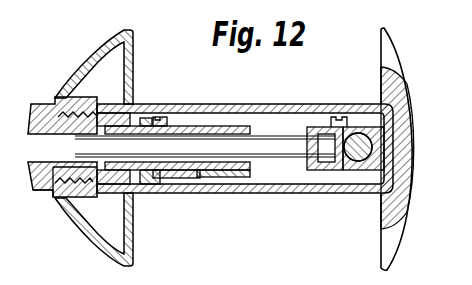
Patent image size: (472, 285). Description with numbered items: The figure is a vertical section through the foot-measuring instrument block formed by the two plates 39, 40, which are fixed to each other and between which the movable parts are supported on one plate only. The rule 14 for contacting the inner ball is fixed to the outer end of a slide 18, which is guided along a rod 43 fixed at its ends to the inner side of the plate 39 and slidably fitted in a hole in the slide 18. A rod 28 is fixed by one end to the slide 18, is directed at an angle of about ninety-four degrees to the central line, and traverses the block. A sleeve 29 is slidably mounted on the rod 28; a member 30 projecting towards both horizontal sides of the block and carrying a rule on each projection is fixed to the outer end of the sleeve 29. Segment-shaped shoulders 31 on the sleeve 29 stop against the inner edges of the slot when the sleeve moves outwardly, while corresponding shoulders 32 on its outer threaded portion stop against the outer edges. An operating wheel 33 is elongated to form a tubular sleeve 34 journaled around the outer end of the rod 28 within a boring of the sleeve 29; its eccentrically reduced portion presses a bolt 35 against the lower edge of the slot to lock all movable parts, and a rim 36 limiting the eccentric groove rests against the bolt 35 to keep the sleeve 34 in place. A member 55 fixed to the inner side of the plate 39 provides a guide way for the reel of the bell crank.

The rule 14 is at (403, 72).
The slide 18 is at (336, 172).
The rod 28 is at (270, 158).
The sleeve 29 is at (203, 127).
The member 30 is at (92, 55).
The segment-shaped shoulders 31 is at (167, 118).
The shoulders 32 is at (72, 230).
The operating wheel 33 is at (47, 190).
The tubular sleeve 34 is at (75, 130).
The bolt 35 is at (158, 186).
The rim 36 is at (150, 117).
The plate 39 is at (227, 185).
The plate 40 is at (237, 105).
The rod 43 is at (360, 138).
The member 55 is at (197, 178).